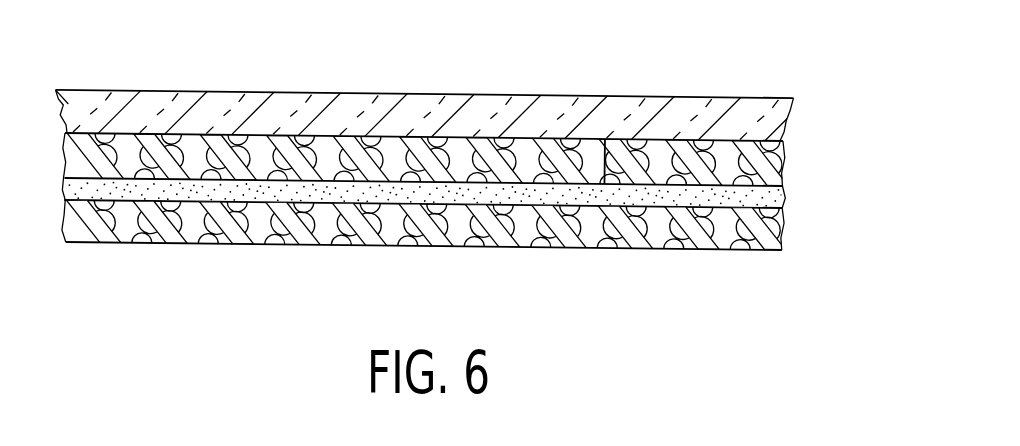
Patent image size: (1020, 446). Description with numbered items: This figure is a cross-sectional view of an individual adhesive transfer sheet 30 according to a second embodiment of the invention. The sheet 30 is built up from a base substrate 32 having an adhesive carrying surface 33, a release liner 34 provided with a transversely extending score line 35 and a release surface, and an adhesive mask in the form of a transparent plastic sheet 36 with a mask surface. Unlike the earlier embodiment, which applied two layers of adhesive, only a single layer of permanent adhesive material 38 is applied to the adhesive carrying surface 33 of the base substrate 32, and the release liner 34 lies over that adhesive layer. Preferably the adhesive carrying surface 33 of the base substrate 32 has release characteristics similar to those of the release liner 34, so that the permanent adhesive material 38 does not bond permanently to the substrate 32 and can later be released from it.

The adhesive transfer sheet 30 is at (477, 181).
The base substrate 32 is at (610, 237).
The adhesive carrying surface 33 is at (272, 198).
The release liner 34 is at (712, 153).
The score line 35 is at (583, 160).
The transparent plastic sheet 36 is at (250, 102).
The permanent adhesive material 38 is at (790, 192).